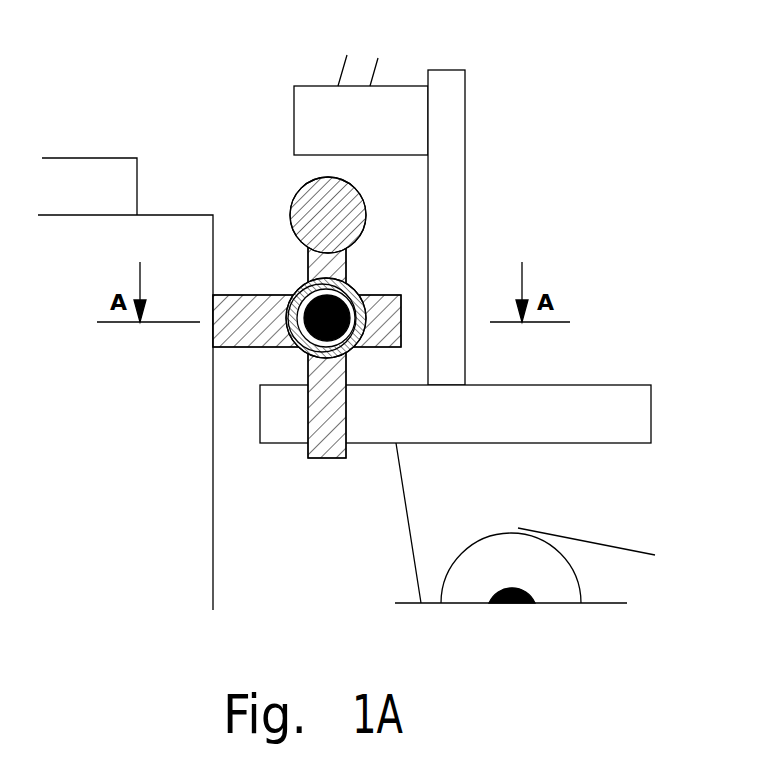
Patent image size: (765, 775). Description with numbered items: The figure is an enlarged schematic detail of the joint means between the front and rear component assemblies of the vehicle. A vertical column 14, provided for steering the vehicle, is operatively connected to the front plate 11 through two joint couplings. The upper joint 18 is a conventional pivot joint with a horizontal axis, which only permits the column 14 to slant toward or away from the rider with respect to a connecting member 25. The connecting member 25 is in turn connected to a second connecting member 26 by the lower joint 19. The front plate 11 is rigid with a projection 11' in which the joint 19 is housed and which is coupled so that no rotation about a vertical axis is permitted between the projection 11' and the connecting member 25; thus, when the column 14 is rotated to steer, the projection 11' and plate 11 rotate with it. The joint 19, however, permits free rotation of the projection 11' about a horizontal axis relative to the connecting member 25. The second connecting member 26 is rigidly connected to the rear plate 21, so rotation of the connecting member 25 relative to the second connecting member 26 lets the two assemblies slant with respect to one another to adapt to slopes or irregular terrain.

The front plate 11 is at (125, 350).
The projection 11' is at (307, 271).
The vertical column 14 is at (362, 70).
The joint 18 is at (347, 213).
The lower joint 19 is at (293, 347).
The rear plate 21 is at (546, 393).
The connecting member 25 is at (316, 265).
The second connecting member 26 is at (307, 365).